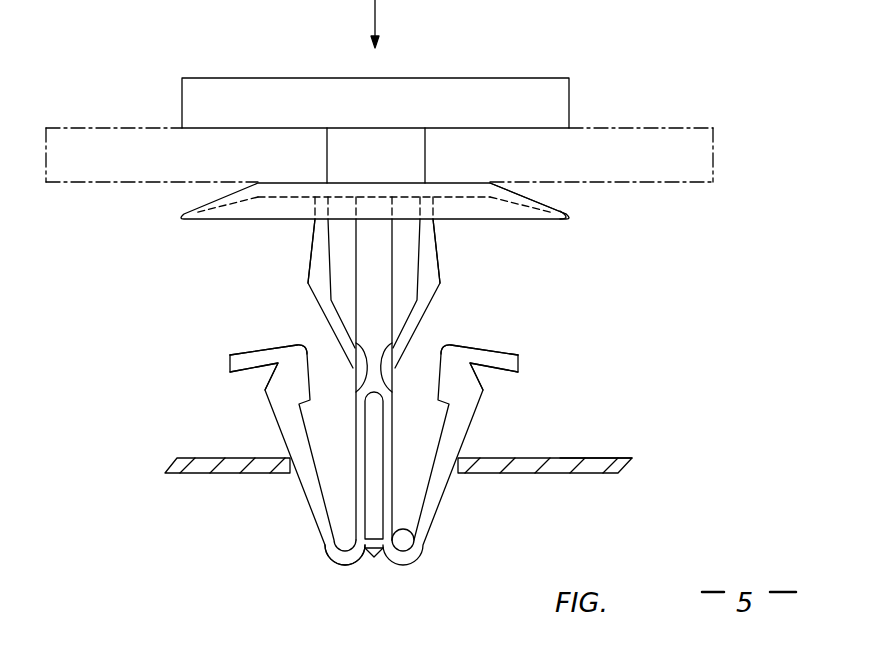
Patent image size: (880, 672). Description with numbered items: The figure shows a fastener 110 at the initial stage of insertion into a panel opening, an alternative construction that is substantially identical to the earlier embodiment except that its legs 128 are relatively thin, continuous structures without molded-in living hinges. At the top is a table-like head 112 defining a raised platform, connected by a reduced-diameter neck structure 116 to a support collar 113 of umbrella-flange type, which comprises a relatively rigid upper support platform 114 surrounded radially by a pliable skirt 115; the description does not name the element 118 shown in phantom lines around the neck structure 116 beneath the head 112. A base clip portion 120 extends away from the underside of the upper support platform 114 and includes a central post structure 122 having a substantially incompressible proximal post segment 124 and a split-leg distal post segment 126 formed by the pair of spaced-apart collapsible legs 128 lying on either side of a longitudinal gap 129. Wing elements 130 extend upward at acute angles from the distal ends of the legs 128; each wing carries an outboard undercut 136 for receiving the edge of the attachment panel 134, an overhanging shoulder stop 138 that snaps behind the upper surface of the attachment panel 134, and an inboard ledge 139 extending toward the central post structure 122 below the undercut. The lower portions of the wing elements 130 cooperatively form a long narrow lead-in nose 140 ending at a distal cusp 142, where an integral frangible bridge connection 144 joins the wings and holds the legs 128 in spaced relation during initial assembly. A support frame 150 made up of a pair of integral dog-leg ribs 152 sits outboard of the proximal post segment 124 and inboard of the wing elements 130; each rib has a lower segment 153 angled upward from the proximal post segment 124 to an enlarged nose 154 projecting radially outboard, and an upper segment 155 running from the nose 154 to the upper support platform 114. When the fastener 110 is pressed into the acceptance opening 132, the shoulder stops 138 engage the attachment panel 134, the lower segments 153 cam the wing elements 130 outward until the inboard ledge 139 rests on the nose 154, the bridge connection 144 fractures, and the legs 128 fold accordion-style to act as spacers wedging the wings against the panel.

The fastener 110 is at (126, 68).
The head 112 is at (264, 78).
The support collar 113 is at (547, 207).
The upper support platform 114 is at (457, 182).
The pliable skirt 115 is at (542, 224).
The neck structure 116 is at (395, 150).
The first panel 118 is at (675, 127).
The base clip portion 120 is at (250, 405).
The central post structure 122 is at (441, 282).
The proximal post segment 124 is at (374, 275).
The distal post segment 126 is at (450, 455).
The legs 128 is at (298, 470).
The longitudinal gap 129 is at (418, 530).
The wing elements 130 is at (250, 474).
The acceptance opening 132 is at (455, 470).
The attachment panel 134 is at (602, 456).
The outboard undercut 136 is at (262, 382).
The shoulder stop 138 is at (230, 355).
The inboard ledge 139 is at (290, 443).
The lead-in nose 140 is at (307, 523).
The distal cusp 142 is at (370, 560).
The frangible bridge connection 144 is at (370, 560).
The support frame 150 is at (307, 288).
The ribs 152 is at (333, 341).
The lower segment 153 is at (352, 390).
The nose 154 is at (443, 262).
The upper segment 155 is at (316, 242).